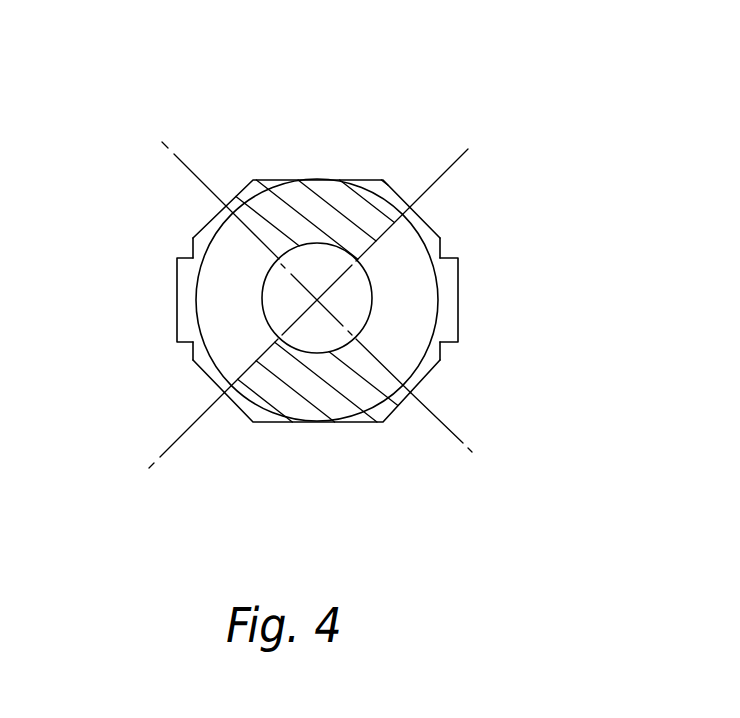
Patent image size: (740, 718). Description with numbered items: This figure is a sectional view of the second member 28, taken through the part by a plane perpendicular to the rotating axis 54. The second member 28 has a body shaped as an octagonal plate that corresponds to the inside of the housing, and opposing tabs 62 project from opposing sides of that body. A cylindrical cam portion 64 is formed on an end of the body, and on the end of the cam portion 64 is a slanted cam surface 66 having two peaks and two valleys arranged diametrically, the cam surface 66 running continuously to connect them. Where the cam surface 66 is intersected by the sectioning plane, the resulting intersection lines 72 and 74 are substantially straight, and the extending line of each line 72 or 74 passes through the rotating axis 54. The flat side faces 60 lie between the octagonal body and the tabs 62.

The second member 28 is at (524, 50).
The rotating axis 54 is at (290, 318).
The flat side face 60 is at (193, 250).
The tabs 62 is at (187, 305).
The cylindrical cam portion 64 is at (325, 190).
The slanted cam surface 66 is at (243, 252).
The intersection line 72 is at (255, 182).
The intersection line 74 is at (180, 440).